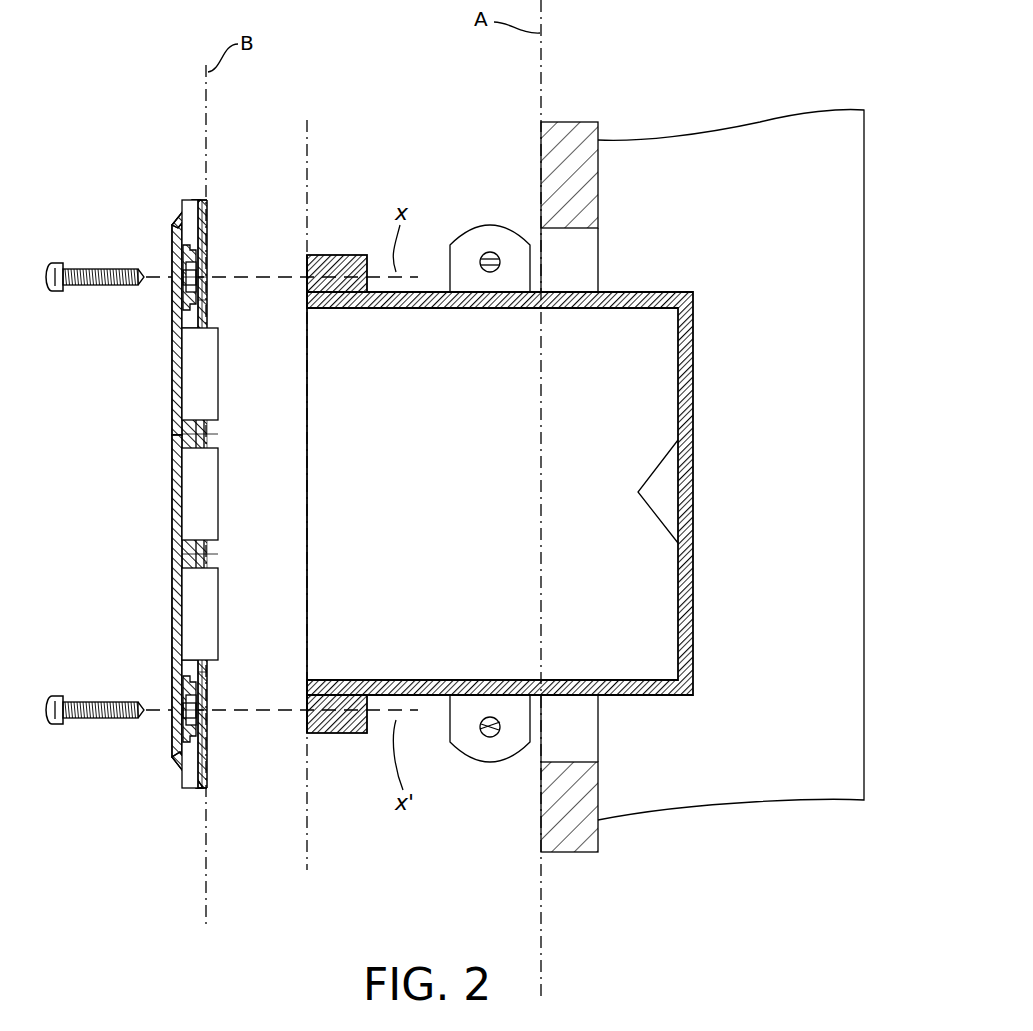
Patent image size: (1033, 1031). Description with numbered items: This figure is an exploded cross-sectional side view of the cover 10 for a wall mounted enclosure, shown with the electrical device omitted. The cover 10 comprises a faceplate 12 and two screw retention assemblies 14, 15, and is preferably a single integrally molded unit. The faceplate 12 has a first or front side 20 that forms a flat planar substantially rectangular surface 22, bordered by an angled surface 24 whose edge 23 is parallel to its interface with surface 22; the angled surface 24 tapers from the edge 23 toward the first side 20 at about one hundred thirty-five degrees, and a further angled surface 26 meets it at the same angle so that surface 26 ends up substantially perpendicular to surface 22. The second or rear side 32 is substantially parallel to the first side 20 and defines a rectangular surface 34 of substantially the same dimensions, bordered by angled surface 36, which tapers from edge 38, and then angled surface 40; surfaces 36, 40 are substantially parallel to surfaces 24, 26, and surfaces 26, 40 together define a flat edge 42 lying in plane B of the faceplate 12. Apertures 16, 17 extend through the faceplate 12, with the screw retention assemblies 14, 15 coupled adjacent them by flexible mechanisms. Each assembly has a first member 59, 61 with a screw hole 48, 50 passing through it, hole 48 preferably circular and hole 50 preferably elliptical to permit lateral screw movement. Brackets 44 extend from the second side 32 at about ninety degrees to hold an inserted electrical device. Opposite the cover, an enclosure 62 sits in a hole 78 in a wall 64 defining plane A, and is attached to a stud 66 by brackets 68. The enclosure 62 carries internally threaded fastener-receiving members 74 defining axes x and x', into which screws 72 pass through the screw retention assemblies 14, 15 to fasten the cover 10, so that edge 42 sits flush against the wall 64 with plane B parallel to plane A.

The cover 10 is at (152, 540).
The faceplate 12 is at (172, 433).
The screw retention assembly 14 is at (183, 268).
The screw retention assembly 15 is at (185, 718).
The aperture 16 is at (183, 290).
The aperture 17 is at (180, 690).
The first side 20 is at (172, 375).
The rectangular surface 22 is at (172, 495).
The edge 23 is at (195, 205).
The angled surface 24 is at (185, 232).
The angled surface 26 is at (200, 200).
The second side 32 is at (218, 432).
The rectangular surface 34 is at (218, 550).
The angled surface 36 is at (205, 240).
The edge 38 is at (207, 226).
The angled surface 40 is at (207, 216).
The edge 42 is at (208, 204).
The brackets 44 is at (218, 375).
The screw hole 48 is at (207, 283).
The screw hole 50 is at (205, 698).
The first member 59 is at (210, 300).
The first member 61 is at (210, 672).
The enclosure 62 is at (680, 697).
The wall 64 is at (600, 125).
The stud 66 is at (778, 112).
The brackets 68 is at (487, 222).
The screws 72 is at (85, 290).
The fastener-receiving members 74 is at (338, 255).
The hole 78 is at (598, 268).